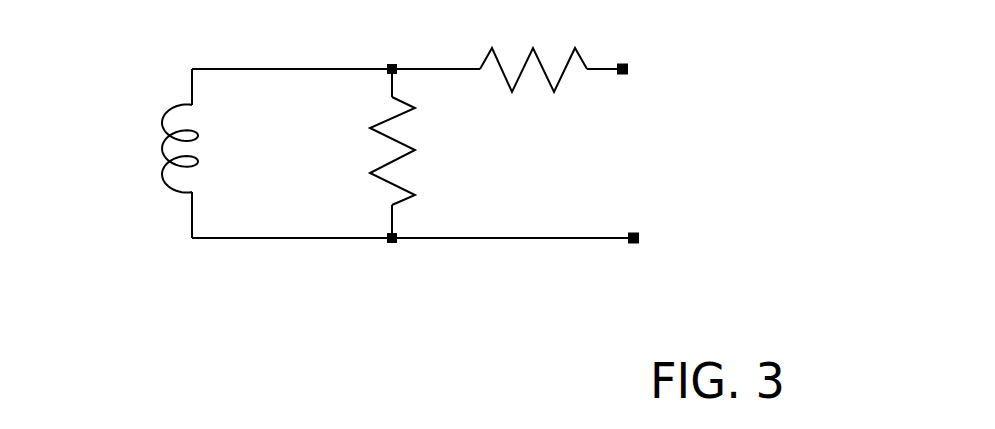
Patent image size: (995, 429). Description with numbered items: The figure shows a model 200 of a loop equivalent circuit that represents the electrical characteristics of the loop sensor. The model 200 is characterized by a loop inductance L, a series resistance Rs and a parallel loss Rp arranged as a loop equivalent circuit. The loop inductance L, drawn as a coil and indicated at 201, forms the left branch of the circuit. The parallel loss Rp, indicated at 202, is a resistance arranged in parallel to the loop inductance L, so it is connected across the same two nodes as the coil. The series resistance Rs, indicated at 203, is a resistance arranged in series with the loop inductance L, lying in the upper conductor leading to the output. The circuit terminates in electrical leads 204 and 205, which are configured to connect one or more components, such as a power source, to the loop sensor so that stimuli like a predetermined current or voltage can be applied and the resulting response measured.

The model of loop equivalent circuit 200 is at (352, 290).
The loop inductance L 201 is at (170, 209).
The parallel loss resistance Rp 202 is at (377, 110).
The series resistance Rs 203 is at (559, 107).
The electrical lead 204 is at (646, 68).
The electrical lead 205 is at (658, 241).